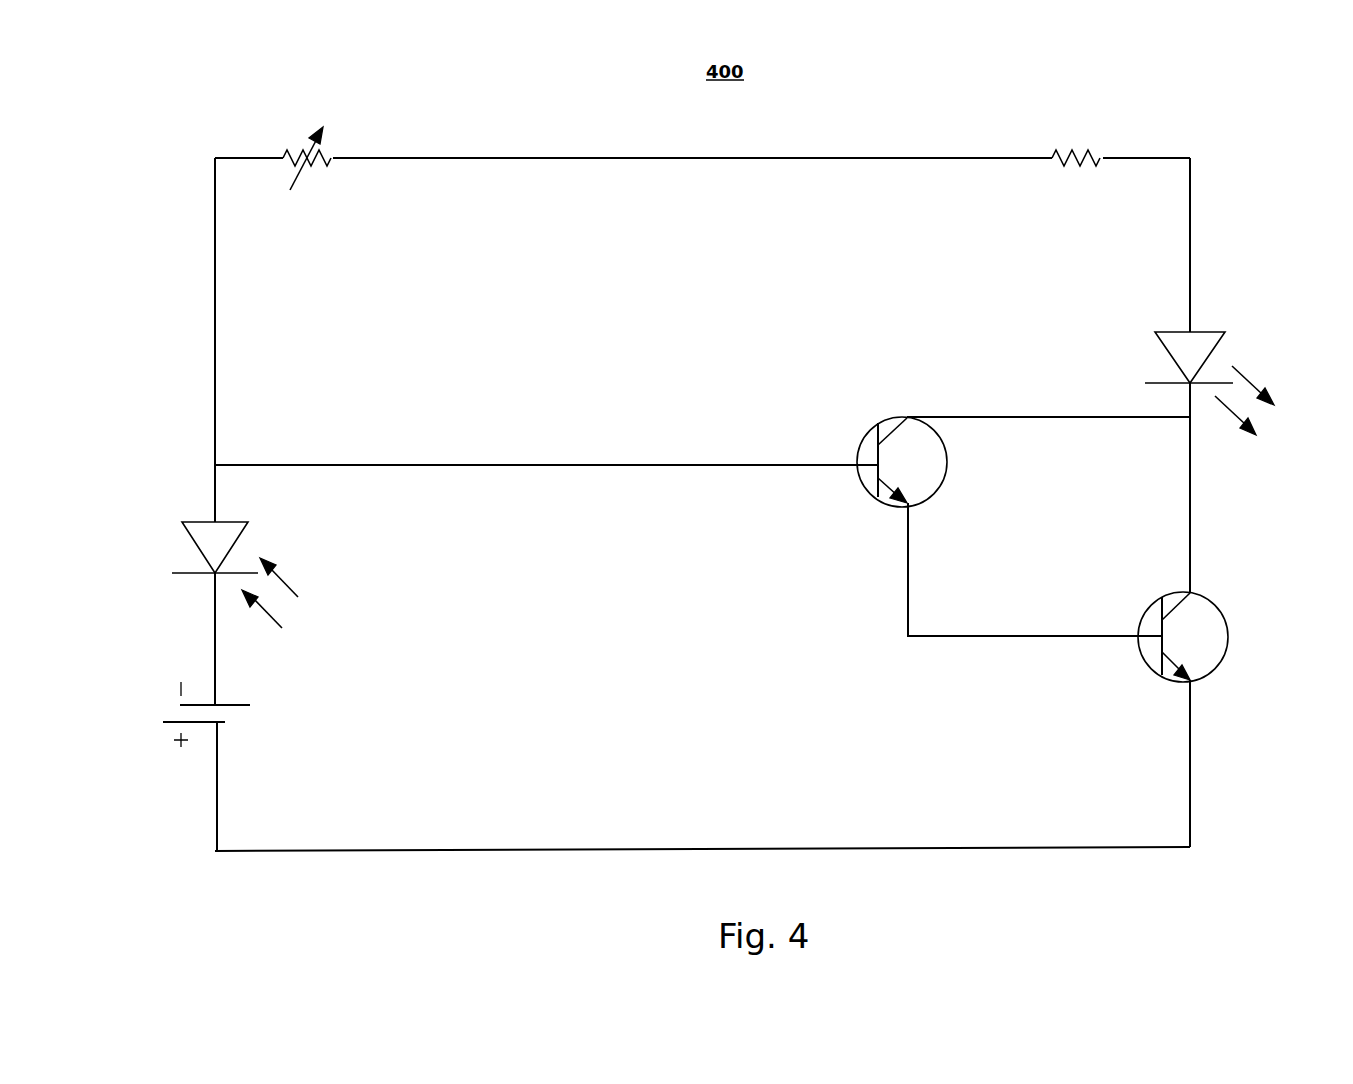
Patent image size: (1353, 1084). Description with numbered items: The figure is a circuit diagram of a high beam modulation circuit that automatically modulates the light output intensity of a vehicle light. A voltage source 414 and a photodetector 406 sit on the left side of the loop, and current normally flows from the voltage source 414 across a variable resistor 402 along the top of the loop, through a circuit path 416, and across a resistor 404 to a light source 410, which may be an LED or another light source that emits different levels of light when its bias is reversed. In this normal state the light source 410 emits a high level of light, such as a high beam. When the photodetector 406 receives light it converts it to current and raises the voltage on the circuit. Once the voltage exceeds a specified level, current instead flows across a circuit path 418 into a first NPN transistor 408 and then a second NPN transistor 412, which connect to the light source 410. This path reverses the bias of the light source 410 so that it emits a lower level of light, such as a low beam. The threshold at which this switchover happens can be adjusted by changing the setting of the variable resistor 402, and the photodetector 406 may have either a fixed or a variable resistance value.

The variable resistor 402 is at (283, 158).
The resistor 404 is at (1060, 142).
The photodetector 406 is at (180, 522).
The NPN transistor 408 is at (880, 417).
The light source 410 is at (1155, 332).
The NPN transistor 412 is at (1223, 605).
The voltage source 414 is at (250, 722).
The circuit path 416 is at (613, 158).
The circuit path 418 is at (613, 465).